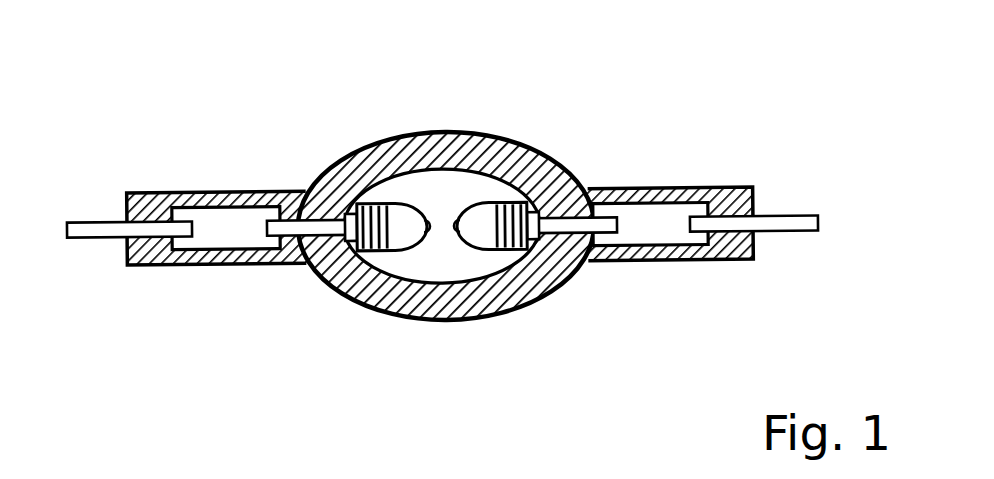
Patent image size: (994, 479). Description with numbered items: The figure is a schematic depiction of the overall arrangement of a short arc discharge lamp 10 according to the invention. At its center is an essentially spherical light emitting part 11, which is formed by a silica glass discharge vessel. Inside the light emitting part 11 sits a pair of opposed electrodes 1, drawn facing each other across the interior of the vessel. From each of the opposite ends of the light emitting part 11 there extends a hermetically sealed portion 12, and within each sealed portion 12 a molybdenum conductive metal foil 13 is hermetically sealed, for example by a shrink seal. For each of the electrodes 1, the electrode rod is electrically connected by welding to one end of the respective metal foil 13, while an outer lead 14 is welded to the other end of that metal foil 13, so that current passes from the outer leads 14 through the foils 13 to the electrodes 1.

The electrode 1 is at (383, 196).
The short arc discharge lamp 10 is at (537, 141).
The light emitting part 11 is at (450, 328).
The hermetically sealed portion 12 is at (218, 275).
The metal foil 13 is at (212, 213).
The outer lead 14 is at (89, 209).